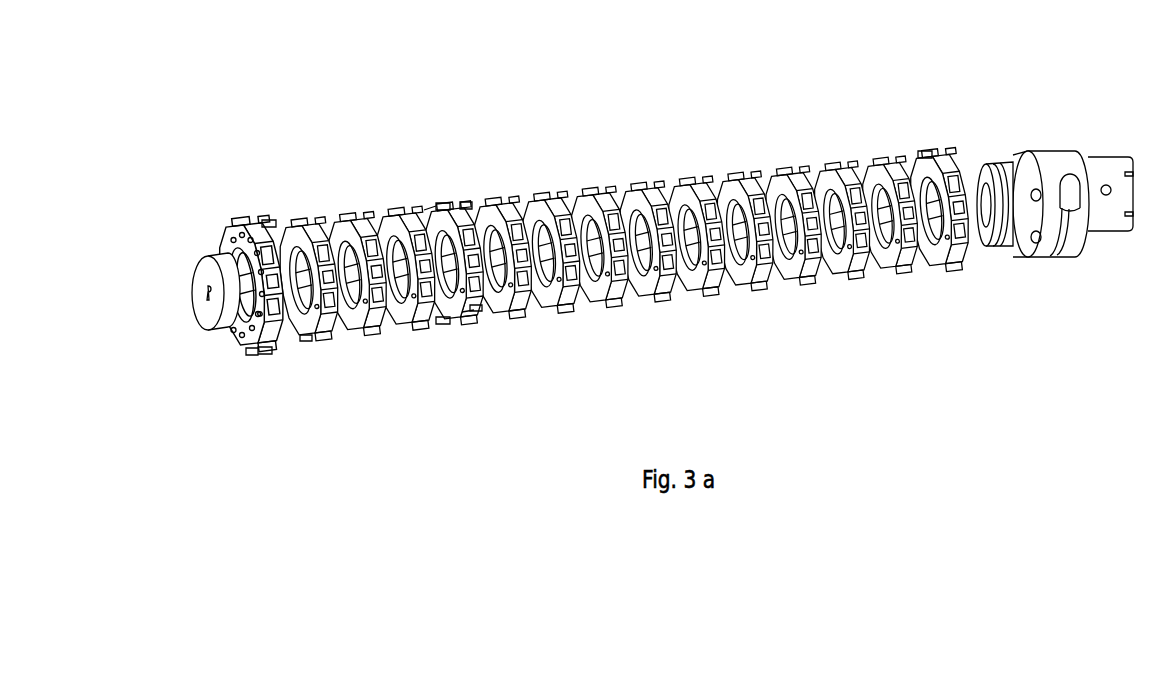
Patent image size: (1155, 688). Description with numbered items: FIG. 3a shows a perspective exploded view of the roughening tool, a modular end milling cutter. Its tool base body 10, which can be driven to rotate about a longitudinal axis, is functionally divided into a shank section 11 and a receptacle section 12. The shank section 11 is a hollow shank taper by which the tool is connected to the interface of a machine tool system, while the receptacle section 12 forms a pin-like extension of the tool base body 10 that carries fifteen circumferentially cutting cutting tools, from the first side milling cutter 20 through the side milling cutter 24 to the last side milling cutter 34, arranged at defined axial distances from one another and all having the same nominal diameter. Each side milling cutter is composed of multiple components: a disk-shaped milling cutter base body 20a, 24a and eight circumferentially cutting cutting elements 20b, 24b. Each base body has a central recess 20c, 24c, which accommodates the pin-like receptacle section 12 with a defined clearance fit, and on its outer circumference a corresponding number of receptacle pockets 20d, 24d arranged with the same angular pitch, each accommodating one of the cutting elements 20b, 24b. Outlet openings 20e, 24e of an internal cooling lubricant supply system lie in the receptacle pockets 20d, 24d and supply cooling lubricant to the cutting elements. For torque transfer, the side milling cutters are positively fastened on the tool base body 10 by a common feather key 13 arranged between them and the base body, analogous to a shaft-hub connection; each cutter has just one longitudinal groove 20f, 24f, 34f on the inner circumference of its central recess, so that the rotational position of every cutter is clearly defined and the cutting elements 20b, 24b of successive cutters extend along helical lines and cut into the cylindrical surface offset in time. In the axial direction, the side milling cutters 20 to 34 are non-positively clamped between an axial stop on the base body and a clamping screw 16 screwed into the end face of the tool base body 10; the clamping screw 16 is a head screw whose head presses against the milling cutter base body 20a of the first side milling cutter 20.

The tool base body 10 is at (993, 137).
The shank section 11 is at (1075, 250).
The receptacle section 12 is at (987, 248).
The feather key 13 is at (880, 270).
The clamping screw 16 is at (195, 300).
The side milling cutter 20 is at (234, 276).
The milling cutter base body 20a is at (240, 330).
The cutting element 20b is at (265, 234).
The central recess 20c is at (232, 252).
The receptacle pocket 20d is at (318, 330).
The outlet opening 20e is at (303, 340).
The longitudinal groove 20f is at (235, 282).
The side milling cutter 24 is at (460, 254).
The milling cutter base body 24a is at (432, 318).
The cutting element 24b is at (462, 215).
The central recess 24c is at (432, 217).
The receptacle pocket 24d is at (515, 310).
The outlet opening 24e is at (490, 313).
The longitudinal groove 24f is at (420, 222).
The side milling cutter 34 is at (932, 171).
The longitudinal groove 34f is at (920, 172).